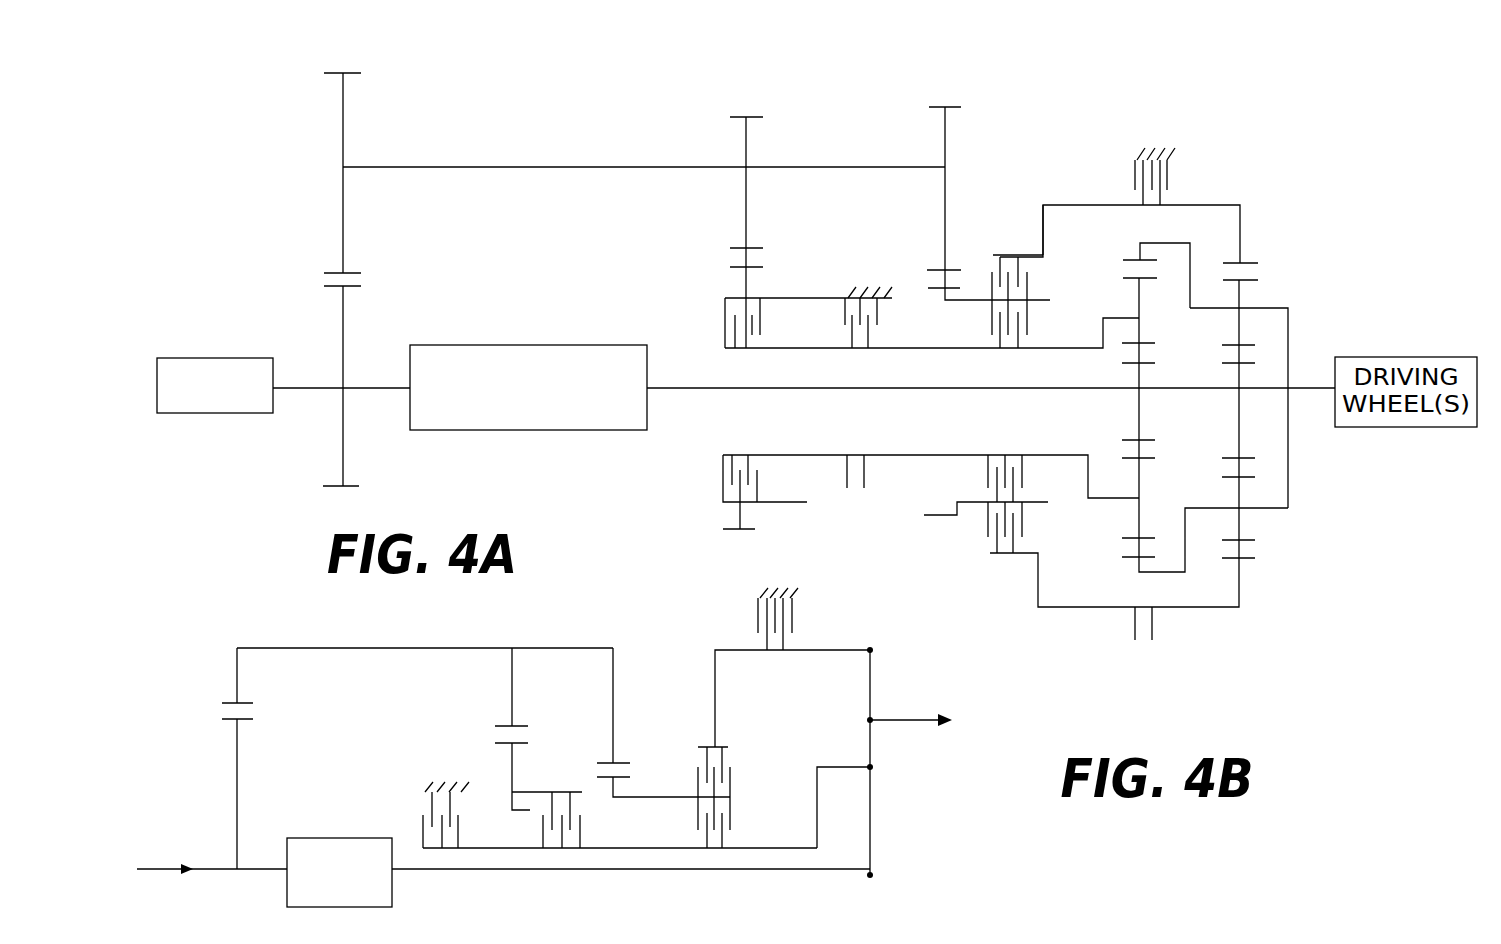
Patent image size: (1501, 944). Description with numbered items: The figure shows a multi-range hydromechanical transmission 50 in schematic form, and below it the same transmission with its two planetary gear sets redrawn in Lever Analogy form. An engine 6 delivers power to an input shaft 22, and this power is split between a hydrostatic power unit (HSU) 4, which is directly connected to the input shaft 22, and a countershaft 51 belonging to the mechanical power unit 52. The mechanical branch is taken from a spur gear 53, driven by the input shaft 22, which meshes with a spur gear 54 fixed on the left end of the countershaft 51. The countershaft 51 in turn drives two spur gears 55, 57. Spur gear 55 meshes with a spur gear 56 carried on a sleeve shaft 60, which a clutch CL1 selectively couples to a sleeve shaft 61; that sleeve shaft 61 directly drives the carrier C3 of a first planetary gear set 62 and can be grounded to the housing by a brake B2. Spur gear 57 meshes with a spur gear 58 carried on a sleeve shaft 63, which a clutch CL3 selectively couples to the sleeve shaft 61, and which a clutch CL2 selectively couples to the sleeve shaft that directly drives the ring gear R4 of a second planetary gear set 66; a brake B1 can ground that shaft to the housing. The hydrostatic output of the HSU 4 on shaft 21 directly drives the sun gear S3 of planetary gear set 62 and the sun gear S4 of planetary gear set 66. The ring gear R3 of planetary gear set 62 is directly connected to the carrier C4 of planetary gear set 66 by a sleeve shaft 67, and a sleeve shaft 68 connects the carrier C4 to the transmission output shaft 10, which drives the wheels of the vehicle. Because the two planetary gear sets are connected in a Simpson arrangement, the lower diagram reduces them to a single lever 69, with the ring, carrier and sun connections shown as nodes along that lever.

In FIG. 4A, the hydrostatic power unit 4 is at (528, 430).
In FIG. 4B, the hydrostatic power unit 4 is at (339, 872).
In FIG. 4A, the engine 6 is at (205, 413).
In FIG. 4A, the transmission output shaft 10 is at (1312, 392).
In FIG. 4B, the transmission output shaft 10 is at (893, 720).
In FIG. 4A, the shaft 21 is at (950, 388).
In FIG. 4B, the shaft 21 is at (653, 875).
In FIG. 4A, the input shaft 22 is at (310, 388).
In FIG. 4B, the input shaft 22 is at (213, 869).
In FIG. 4A, the multi-range hydromechanical transmission 50 is at (278, 198).
In FIG. 4A, the countershaft 51 is at (437, 167).
In FIG. 4A, the mechanical power unit 52 is at (1033, 135).
In FIG. 4A, the spur gear 53 is at (355, 286).
In FIG. 4B, the spur gear 53 is at (250, 719).
In FIG. 4A, the spur gear 54 is at (350, 273).
In FIG. 4B, the spur gear 54 is at (243, 703).
In FIG. 4A, the spur gear 55 is at (748, 248).
In FIG. 4B, the spur gear 55 is at (518, 726).
In FIG. 4A, the spur gear 56 is at (763, 268).
In FIG. 4B, the spur gear 56 is at (522, 743).
In FIG. 4A, the spur gear 57 is at (948, 270).
In FIG. 4B, the spur gear 57 is at (618, 763).
In FIG. 4A, the spur gear 58 is at (928, 290).
In FIG. 4B, the spur gear 58 is at (625, 777).
In FIG. 4A, the sleeve shaft 60 is at (800, 298).
In FIG. 4A, the sleeve shaft 61 is at (797, 348).
In FIG. 4A, the planetary gear set 62 is at (1178, 223).
In FIG. 4A, the sleeve shaft 63 is at (968, 300).
In FIG. 4A, the second planetary gear set 66 is at (1266, 223).
In FIG. 4A, the sleeve shaft 67 is at (1188, 243).
In FIG. 4A, the sleeve shaft 68 is at (1288, 325).
In FIG. 4A, the lever 69 is at (1073, 205).
In FIG. 4B, the lever 69 is at (870, 837).
In FIG. 4A, the brake B1 is at (1130, 158).
In FIG. 4B, the brake B1 is at (800, 620).
In FIG. 4A, the brake B2 is at (838, 307).
In FIG. 4B, the brake B2 is at (422, 815).
In FIG. 4A, the clutch CL1 is at (720, 476).
In FIG. 4B, the clutch CL1 is at (595, 830).
In FIG. 4A, the clutch CL2 is at (1035, 292).
In FIG. 4B, the clutch CL2 is at (740, 775).
In FIG. 4A, the clutch CL3 is at (1033, 330).
In FIG. 4B, the clutch CL3 is at (740, 826).
In FIG. 4A, the ring gear R3 is at (1122, 246).
In FIG. 4A, the ring gear R4 is at (1278, 251).
In FIG. 4A, the carrier C3 is at (1161, 311).
In FIG. 4A, the carrier C4 is at (1243, 298).
In FIG. 4A, the sun gear S3 is at (1205, 457).
In FIG. 4A, the sun gear S4 is at (1250, 363).